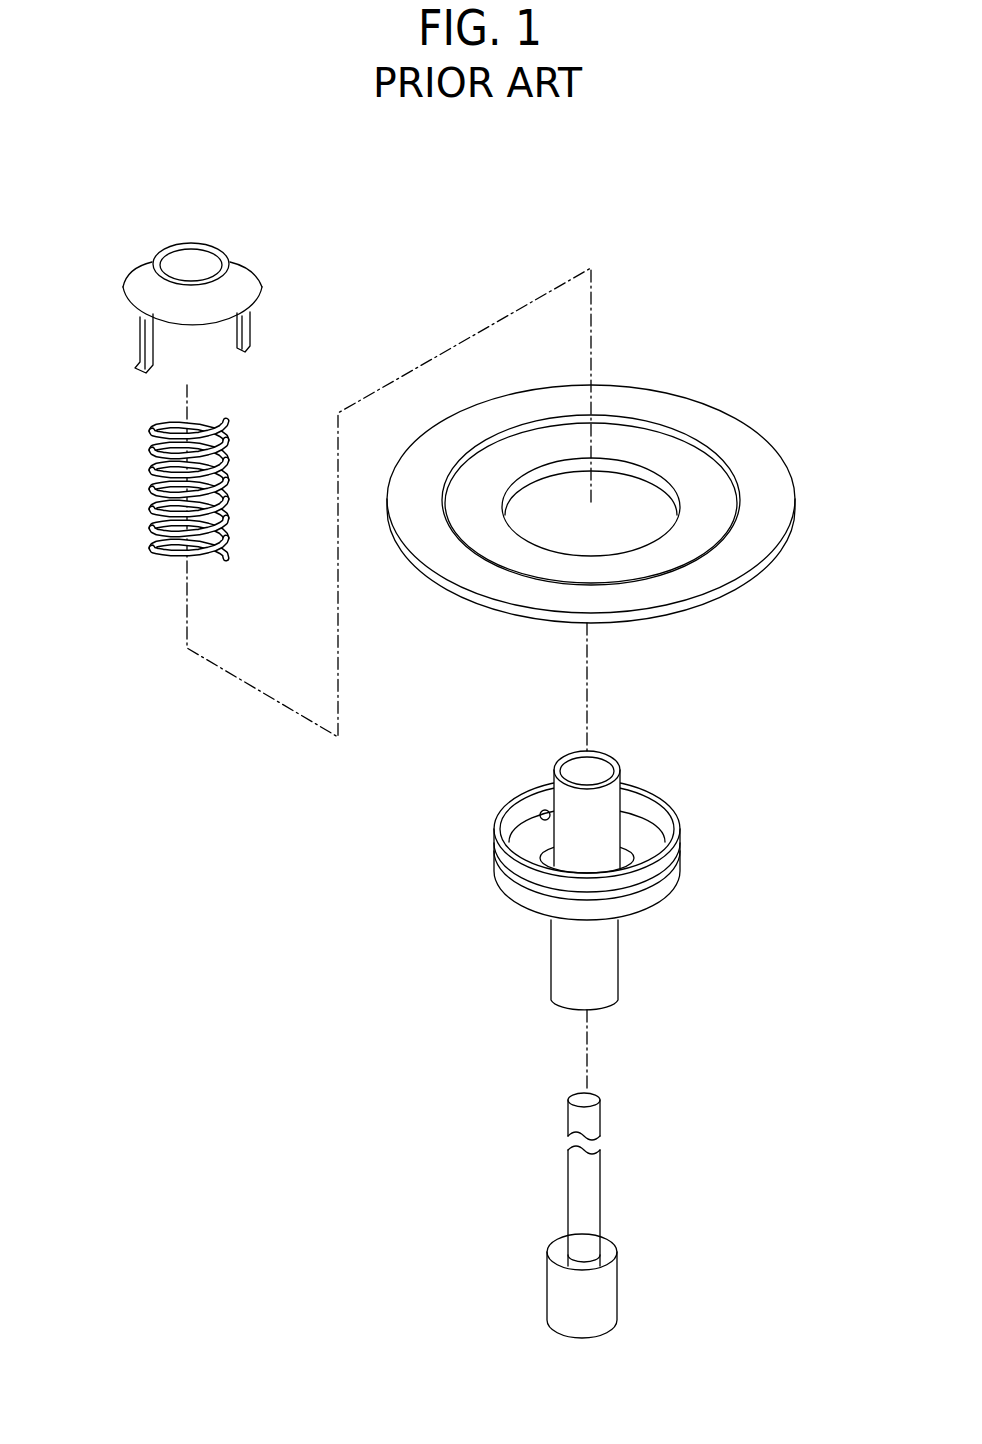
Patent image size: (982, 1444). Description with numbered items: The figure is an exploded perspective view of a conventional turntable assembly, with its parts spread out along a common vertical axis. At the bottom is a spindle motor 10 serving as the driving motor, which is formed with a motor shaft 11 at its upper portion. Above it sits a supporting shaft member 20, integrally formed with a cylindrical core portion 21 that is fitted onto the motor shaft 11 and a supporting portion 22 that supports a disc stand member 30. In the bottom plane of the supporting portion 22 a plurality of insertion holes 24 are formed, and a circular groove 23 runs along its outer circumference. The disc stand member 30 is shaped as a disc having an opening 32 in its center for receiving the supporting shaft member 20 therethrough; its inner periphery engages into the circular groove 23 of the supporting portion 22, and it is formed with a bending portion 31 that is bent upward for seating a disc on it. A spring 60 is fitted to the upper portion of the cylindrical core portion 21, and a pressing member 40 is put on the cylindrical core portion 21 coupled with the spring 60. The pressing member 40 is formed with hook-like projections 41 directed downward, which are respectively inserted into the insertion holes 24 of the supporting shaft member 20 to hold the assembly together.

The spindle motor 10 is at (619, 1298).
The motor shaft 11 is at (576, 1194).
The supporting shaft member 20 is at (594, 845).
The cylindrical core portion 21 is at (575, 758).
The supporting portion 22 is at (648, 843).
The circular groove 23 is at (505, 868).
The insertion holes 24 is at (541, 811).
The disc stand member 30 is at (600, 452).
The bending portion 31 is at (508, 432).
The opening 32 is at (625, 542).
The pressing member 40 is at (138, 267).
The hook-like projections 41 is at (143, 350).
The spring 60 is at (162, 562).